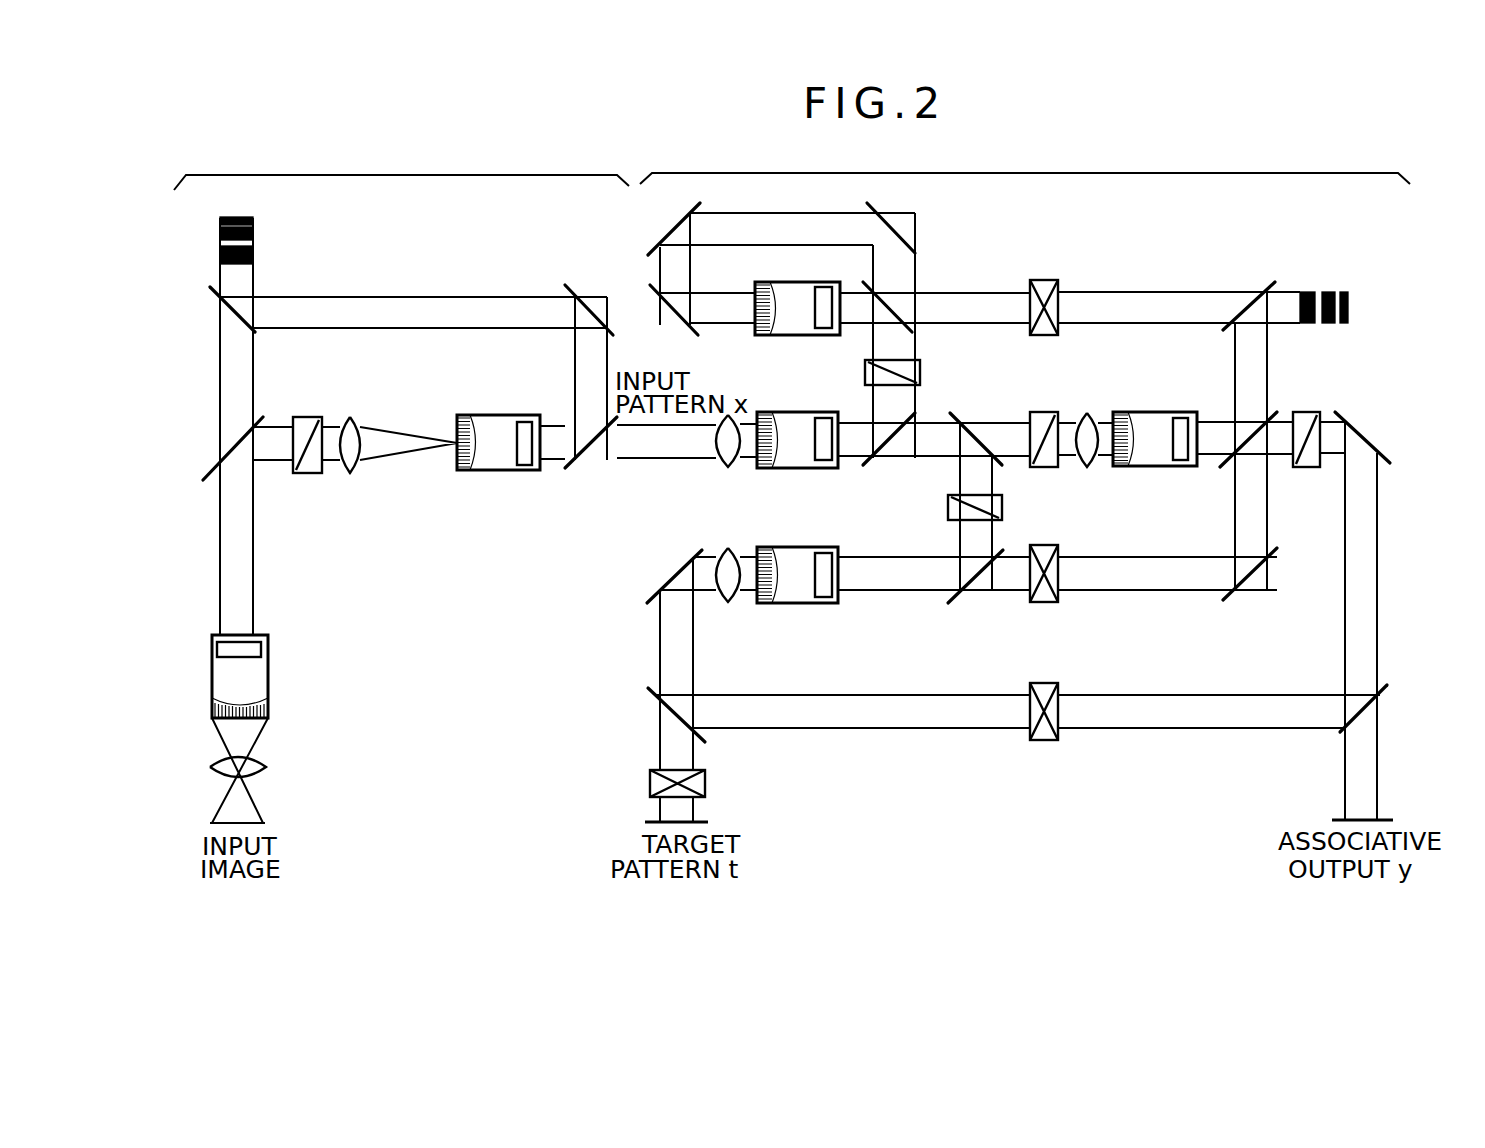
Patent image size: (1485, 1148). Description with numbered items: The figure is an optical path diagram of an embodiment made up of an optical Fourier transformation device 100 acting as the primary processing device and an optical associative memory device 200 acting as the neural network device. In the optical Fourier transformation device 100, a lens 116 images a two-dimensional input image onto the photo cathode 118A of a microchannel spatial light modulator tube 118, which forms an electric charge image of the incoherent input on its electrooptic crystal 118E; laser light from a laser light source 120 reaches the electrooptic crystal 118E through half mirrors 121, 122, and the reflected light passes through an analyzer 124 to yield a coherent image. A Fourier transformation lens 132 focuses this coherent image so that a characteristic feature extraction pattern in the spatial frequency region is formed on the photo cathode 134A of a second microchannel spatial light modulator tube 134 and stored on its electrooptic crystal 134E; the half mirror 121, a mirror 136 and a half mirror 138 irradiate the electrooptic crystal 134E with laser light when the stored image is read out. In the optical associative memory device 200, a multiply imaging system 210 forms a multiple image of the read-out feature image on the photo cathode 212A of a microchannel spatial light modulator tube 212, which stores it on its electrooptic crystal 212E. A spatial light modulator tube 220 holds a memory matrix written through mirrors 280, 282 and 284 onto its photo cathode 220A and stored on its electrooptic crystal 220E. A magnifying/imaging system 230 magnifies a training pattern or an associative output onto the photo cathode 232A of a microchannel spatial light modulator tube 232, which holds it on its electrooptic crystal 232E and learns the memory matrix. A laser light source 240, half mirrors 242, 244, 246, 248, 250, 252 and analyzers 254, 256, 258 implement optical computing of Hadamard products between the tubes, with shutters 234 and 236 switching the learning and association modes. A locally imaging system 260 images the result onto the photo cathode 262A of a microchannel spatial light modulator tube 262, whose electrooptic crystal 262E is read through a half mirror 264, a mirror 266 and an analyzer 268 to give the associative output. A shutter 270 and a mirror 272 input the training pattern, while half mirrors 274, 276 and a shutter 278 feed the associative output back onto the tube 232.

The optical Fourier transformation device 100 is at (401, 170).
The optical associative memory device 200 is at (1025, 164).
The lens 116 is at (268, 772).
The microchannel spatial light modulator tube 118 is at (270, 670).
The photo cathode 118A is at (270, 705).
The electrooptic crystal 118E is at (270, 643).
The laser light source 120 is at (255, 232).
The half mirror 121 is at (258, 336).
The half mirror 122 is at (210, 482).
The analyzer 124 is at (308, 473).
The Fourier transformation lens 132 is at (350, 473).
The microchannel spatial light modulator tube 134 is at (500, 470).
The photo cathode 134A is at (465, 415).
The electrooptic crystal 134E is at (525, 422).
The mirror 136 is at (592, 308).
The half mirror 138 is at (575, 470).
The multiply imaging system 210 is at (722, 468).
The microchannel spatial light modulator tube 212 is at (803, 468).
The photo cathode 212A is at (772, 468).
The electrooptic crystal 212E is at (830, 468).
The spatial light modulator tube 220 is at (803, 335).
The photo cathode 220A is at (770, 282).
The electrooptic crystal 220E is at (825, 287).
The magnifying/imaging system 230 is at (723, 602).
The microchannel spatial light modulator tube 232 is at (805, 603).
The photo cathode 232A is at (767, 603).
The electrooptic crystal 232E is at (837, 603).
The shutter 234 is at (1047, 280).
The shutter 236 is at (1045, 602).
The laser light source 240 is at (1328, 290).
The half mirror 242 is at (1263, 282).
The half mirror 244 is at (915, 332).
The half mirror 246 is at (910, 417).
The half mirror 248 is at (1263, 558).
The half mirror 250 is at (965, 600).
The half mirror 252 is at (1000, 463).
The analyzer 254 is at (922, 372).
The analyzer 256 is at (1002, 513).
The analyzer 258 is at (1040, 412).
The locally imaging system 260 is at (1083, 417).
The microchannel spatial light modulator tube 262 is at (1157, 467).
The photo cathode 262A is at (1122, 467).
The electrooptic crystal 262E is at (1183, 458).
The half mirror 264 is at (1272, 415).
The mirror 266 is at (1355, 425).
The analyzer 268 is at (1312, 467).
The shutter 270 is at (648, 782).
The mirror 272 is at (648, 603).
The half mirror 274 is at (1340, 732).
The half mirror 276 is at (652, 700).
The shutter 278 is at (1045, 740).
The mirror 280 is at (897, 225).
The mirror 282 is at (675, 228).
The mirror 284 is at (664, 322).